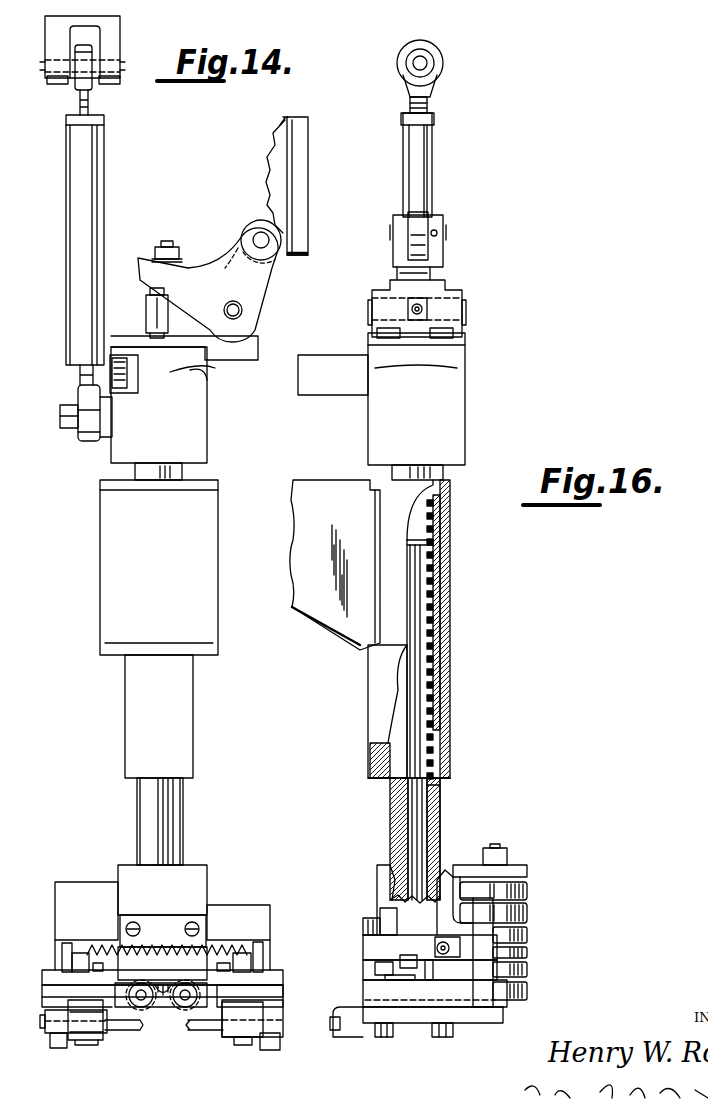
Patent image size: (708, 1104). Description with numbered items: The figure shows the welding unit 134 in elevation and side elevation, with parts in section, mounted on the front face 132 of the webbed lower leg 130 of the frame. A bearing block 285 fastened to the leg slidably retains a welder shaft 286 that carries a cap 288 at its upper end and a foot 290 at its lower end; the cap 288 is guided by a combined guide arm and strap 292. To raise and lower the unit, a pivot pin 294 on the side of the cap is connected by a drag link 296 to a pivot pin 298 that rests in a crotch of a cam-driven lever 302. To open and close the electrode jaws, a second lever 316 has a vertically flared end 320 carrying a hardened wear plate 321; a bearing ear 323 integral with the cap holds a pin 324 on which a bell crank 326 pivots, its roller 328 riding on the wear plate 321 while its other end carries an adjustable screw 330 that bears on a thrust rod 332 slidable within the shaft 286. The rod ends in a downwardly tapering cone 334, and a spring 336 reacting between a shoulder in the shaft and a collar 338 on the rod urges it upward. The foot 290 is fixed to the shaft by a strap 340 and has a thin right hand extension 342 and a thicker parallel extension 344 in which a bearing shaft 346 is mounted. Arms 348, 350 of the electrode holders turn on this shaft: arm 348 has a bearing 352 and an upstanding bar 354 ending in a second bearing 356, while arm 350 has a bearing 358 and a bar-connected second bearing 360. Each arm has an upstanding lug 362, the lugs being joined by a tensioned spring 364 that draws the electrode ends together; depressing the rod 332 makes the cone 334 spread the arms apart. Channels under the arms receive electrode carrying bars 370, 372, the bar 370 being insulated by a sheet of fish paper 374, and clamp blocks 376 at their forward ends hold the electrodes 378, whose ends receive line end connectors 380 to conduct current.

In FIG. 16, the web 130 is at (297, 605).
In FIG. 16, the front face 132 is at (378, 527).
In FIG. 14, the welding unit 134 is at (223, 575).
In FIG. 16, the welding unit 134 is at (455, 642).
In FIG. 14, the bearing block 285 is at (219, 508).
In FIG. 16, the bearing block 285 is at (449, 509).
In FIG. 14, the welder shaft 286 is at (184, 800).
In FIG. 16, the welder shaft 286 is at (417, 467).
In FIG. 14, the cap 288 is at (208, 418).
In FIG. 16, the cap 288 is at (467, 409).
In FIG. 14, the foot 290 is at (193, 864).
In FIG. 16, the foot 290 is at (453, 866).
In FIG. 14, the combined guide arm and strap 292 is at (123, 393).
In FIG. 16, the combined guide arm and strap 292 is at (337, 365).
In FIG. 14, the pivot pin 294 is at (72, 403).
In FIG. 14, the drag link 296 is at (70, 227).
In FIG. 16, the drag link 296 is at (402, 151).
In FIG. 14, the pivot pin 298 is at (124, 68).
In FIG. 16, the pivot pin 298 is at (424, 68).
In FIG. 14, the lever 302 is at (121, 48).
In FIG. 14, the lever 316 is at (268, 176).
In FIG. 14, the flared end 320 is at (303, 130).
In FIG. 14, the hardened wear plate 321 is at (283, 124).
In FIG. 14, the bearing ear 323 is at (257, 344).
In FIG. 16, the bearing ear 323 is at (395, 276).
In FIG. 14, the pin 324 is at (233, 304).
In FIG. 16, the pin 324 is at (462, 303).
In FIG. 14, the bell crank 326 is at (272, 266).
In FIG. 16, the bell crank 326 is at (455, 292).
In FIG. 14, the roller 328 is at (253, 219).
In FIG. 16, the roller 328 is at (415, 231).
In FIG. 14, the adjustable screw 330 is at (165, 243).
In FIG. 14, the thrust rod 332 is at (147, 311).
In FIG. 16, the thrust rod 332 is at (440, 796).
In FIG. 14, the cone 334 is at (167, 953).
In FIG. 14, the spring 336 is at (150, 1001).
In FIG. 16, the spring 336 is at (443, 576).
In FIG. 16, the collar 338 is at (442, 540).
In FIG. 14, the strap 340 is at (167, 921).
In FIG. 16, the strap 340 is at (383, 918).
In FIG. 16, the right hand extension 342 is at (522, 867).
In FIG. 16, the parallel extension 344 is at (527, 937).
In FIG. 16, the bearing shaft 346 is at (510, 1004).
In FIG. 14, the arm 348 is at (250, 982).
In FIG. 16, the arm 348 is at (367, 991).
In FIG. 14, the arm 350 is at (63, 990).
In FIG. 16, the bearing 352 is at (527, 992).
In FIG. 16, the upstanding bar 354 is at (481, 949).
In FIG. 16, the second bearing 356 is at (527, 913).
In FIG. 16, the bearing 358 is at (527, 975).
In FIG. 16, the second bearing 360 is at (527, 890).
In FIG. 14, the upstanding lug 362 is at (262, 951).
In FIG. 14, the tensioned spring 364 is at (222, 951).
In FIG. 14, the electrode carrying bar 370 is at (250, 1003).
In FIG. 16, the electrode carrying bar 370 is at (478, 1016).
In FIG. 14, the electrode carrying bar 372 is at (83, 1020).
In FIG. 14, the fish paper insulating sheet 374 is at (283, 980).
In FIG. 14, the clamp block 376 is at (248, 1041).
In FIG. 16, the clamp block 376 is at (350, 1026).
In FIG. 14, the electrode 378 is at (128, 1029).
In FIG. 14, the line end connector 380 is at (48, 1016).